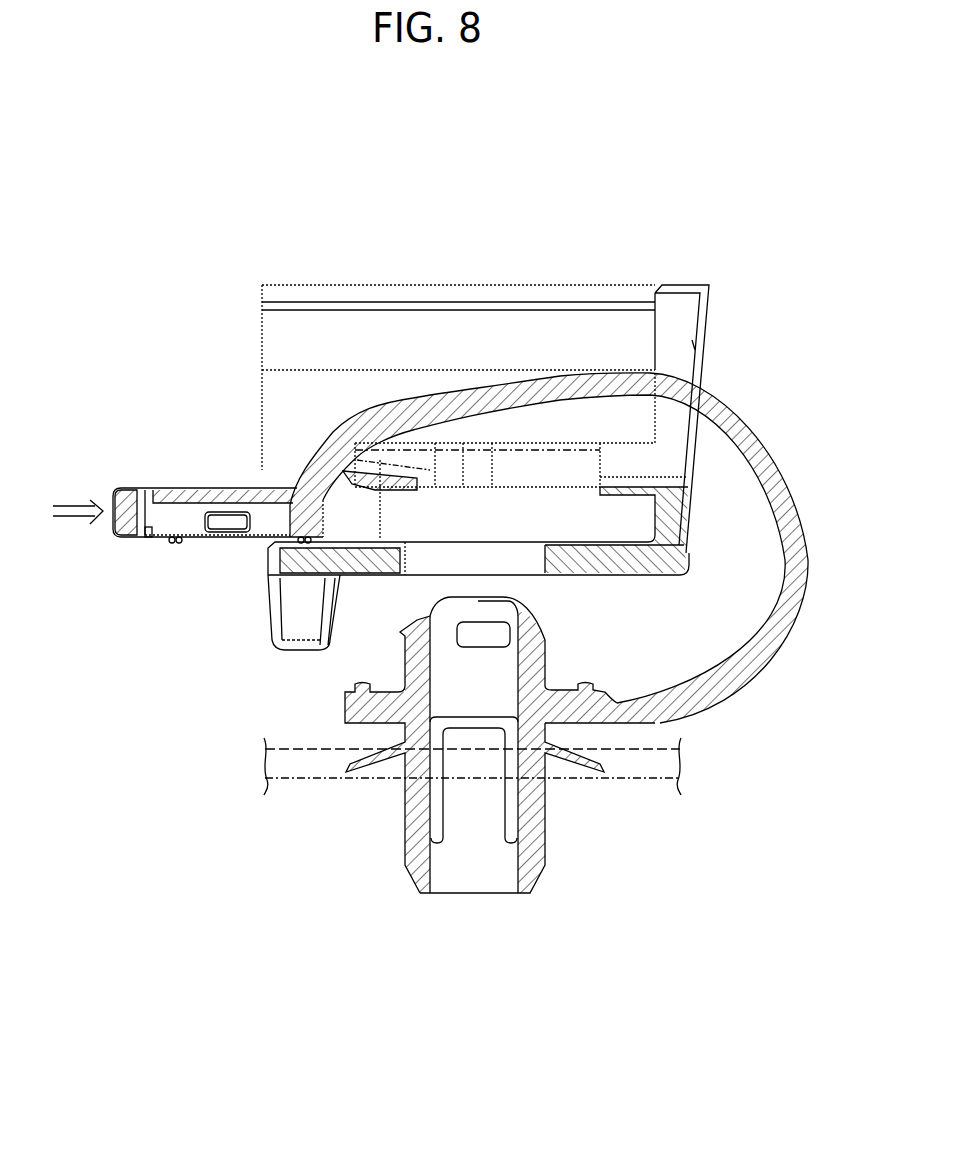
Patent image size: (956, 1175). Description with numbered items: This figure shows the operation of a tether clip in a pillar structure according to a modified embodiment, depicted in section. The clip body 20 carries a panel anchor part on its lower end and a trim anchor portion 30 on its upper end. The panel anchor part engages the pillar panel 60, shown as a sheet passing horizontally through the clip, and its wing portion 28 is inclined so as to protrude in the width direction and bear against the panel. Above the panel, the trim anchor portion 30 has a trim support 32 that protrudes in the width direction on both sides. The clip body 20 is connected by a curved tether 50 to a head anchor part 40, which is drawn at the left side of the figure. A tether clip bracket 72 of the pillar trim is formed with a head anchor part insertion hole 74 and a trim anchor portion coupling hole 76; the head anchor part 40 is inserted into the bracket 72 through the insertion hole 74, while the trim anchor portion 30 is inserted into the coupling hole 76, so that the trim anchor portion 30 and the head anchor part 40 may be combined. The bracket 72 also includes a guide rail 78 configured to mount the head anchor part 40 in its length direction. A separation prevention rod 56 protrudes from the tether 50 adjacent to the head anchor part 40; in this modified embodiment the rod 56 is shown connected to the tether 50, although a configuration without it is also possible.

The clip body 20 is at (454, 803).
The wing portion 28 is at (378, 760).
The trim anchor portion 30 is at (568, 637).
The trim support 32 is at (350, 707).
The head anchor part 40 is at (164, 545).
The tether 50 is at (776, 450).
The separation prevention rod 56 is at (379, 460).
The pillar panel 60 is at (300, 780).
The tether clip bracket 72 is at (705, 562).
The head anchor part insertion hole 74 is at (700, 372).
The trim anchor portion coupling hole 76 is at (470, 553).
The guide rail 78 is at (567, 467).